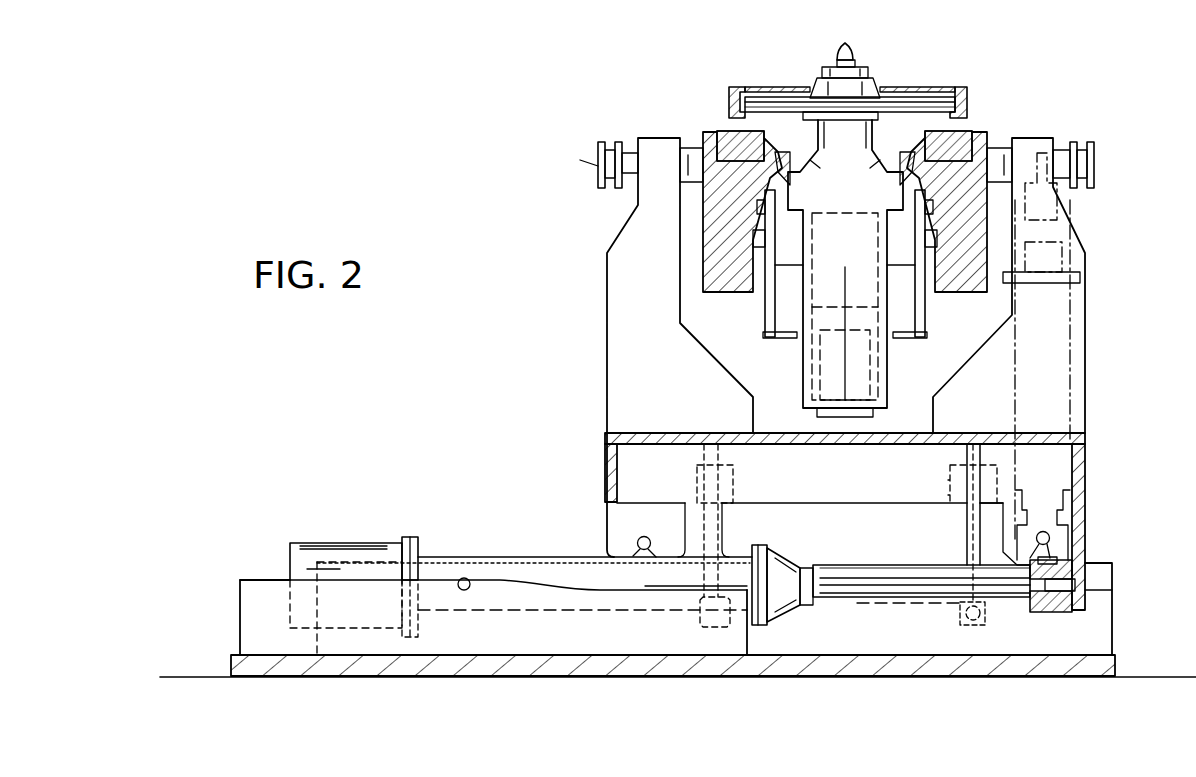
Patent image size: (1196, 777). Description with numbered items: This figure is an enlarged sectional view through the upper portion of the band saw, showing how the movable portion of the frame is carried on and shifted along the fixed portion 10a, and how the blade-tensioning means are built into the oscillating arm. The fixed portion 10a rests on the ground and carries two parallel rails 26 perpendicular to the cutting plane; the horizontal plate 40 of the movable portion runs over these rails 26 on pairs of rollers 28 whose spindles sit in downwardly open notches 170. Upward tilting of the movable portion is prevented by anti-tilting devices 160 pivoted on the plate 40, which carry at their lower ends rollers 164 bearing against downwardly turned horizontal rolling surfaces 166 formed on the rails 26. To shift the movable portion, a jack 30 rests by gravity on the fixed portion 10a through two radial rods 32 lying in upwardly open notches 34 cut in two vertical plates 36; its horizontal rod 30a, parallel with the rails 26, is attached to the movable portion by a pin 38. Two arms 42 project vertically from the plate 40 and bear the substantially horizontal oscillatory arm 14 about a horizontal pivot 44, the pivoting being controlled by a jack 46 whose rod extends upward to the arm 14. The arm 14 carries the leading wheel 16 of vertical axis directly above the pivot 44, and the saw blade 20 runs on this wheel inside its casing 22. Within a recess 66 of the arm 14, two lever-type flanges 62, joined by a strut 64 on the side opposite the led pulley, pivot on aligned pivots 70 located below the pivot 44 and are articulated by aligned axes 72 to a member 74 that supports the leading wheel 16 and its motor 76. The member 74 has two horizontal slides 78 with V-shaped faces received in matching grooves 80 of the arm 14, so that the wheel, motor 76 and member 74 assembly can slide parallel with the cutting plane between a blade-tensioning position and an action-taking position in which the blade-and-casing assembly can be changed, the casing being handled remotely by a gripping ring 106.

The fixed portion of the frame 10a is at (240, 678).
The oscillatory arm 14 is at (958, 225).
The leading wheel 16 is at (790, 100).
The saw blade 20 is at (843, 78).
The casing 22 is at (960, 88).
The rails 26 is at (1100, 573).
The rollers 28 is at (650, 552).
The jack 30 is at (508, 557).
The rod of the jack 30a is at (830, 583).
The radial rods 32 is at (459, 578).
The upwardly open notches 34 is at (466, 578).
The vertical plates 36 is at (270, 587).
The pin 38 is at (1080, 600).
The horizontal plate 40 is at (610, 432).
The arms 42 is at (607, 262).
The horizontal pivot 44 is at (600, 160).
The jack 46 is at (1070, 357).
The lever-type flanges 62 is at (760, 320).
The strut 64 is at (785, 338).
The recess 66 is at (705, 211).
The pivots 70 is at (760, 245).
The aligned axes 72 is at (770, 205).
The member 74 is at (845, 200).
The motor 76 is at (887, 388).
The horizontal slides 78 is at (918, 165).
The grooves 80 is at (720, 140).
The ring 106 is at (836, 347).
The anti-tilting devices 160 is at (968, 540).
The rollers 164 is at (985, 625).
The horizontal rolling surfaces 166 is at (865, 612).
The downwardly open notches 170 is at (635, 552).